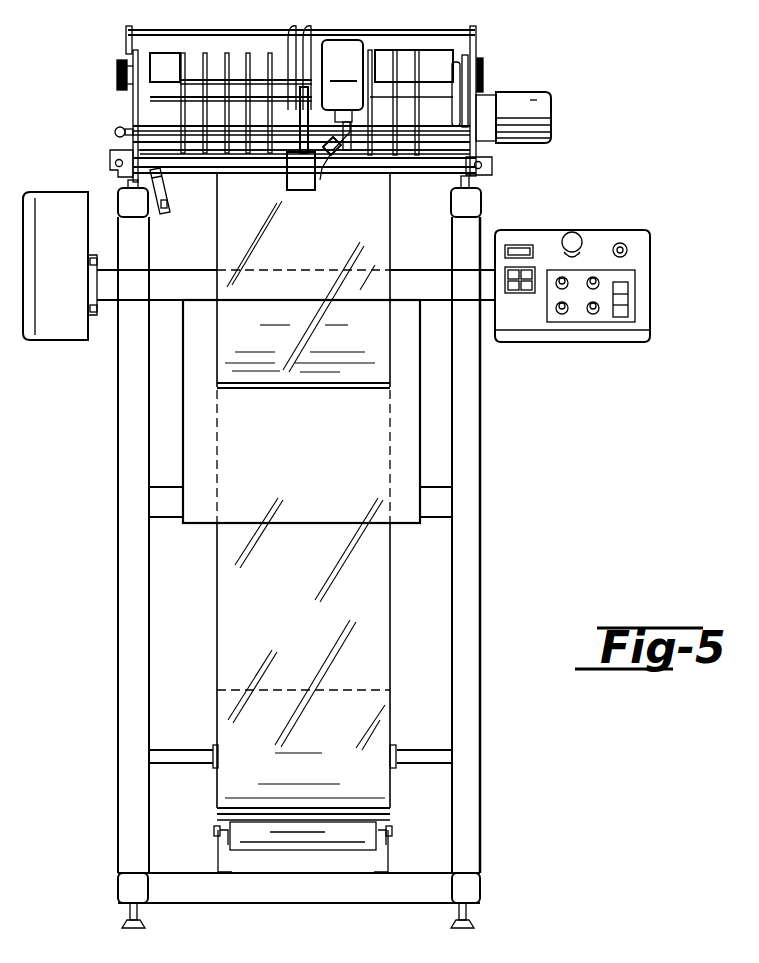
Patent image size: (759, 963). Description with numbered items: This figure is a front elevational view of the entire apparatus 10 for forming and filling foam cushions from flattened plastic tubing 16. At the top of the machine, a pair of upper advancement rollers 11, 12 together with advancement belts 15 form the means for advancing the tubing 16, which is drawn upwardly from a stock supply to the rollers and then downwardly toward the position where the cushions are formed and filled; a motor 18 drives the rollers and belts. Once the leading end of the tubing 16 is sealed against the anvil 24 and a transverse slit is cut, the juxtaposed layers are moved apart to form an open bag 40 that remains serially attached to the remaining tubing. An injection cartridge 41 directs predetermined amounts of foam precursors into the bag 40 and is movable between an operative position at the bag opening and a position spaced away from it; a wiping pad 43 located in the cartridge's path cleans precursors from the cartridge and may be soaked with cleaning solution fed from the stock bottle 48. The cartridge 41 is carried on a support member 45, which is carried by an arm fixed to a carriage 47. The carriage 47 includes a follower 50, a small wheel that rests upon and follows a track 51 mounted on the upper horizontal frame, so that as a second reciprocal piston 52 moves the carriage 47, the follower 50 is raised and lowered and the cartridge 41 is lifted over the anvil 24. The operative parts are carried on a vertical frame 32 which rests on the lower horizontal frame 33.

The apparatus 10 is at (498, 71).
The upper advancement roller 11 is at (163, 56).
The upper advancement roller 12 is at (185, 78).
The advancement belts 15 is at (187, 98).
The flattened plastic tubing 16 is at (318, 614).
The motor 18 is at (525, 103).
The anvil 24 is at (412, 176).
The vertical frame 32 is at (483, 560).
The lower horizontal frame 33 is at (470, 873).
The open bag 40 is at (313, 365).
The injection cartridge 41 is at (287, 182).
The wiping pad 43 is at (300, 190).
The support member 45 is at (320, 167).
The carriage 47 is at (135, 142).
The stock bottle 48 is at (342, 95).
The follower 50 is at (163, 180).
The track 51 is at (160, 210).
The second reciprocal piston 52 is at (112, 132).